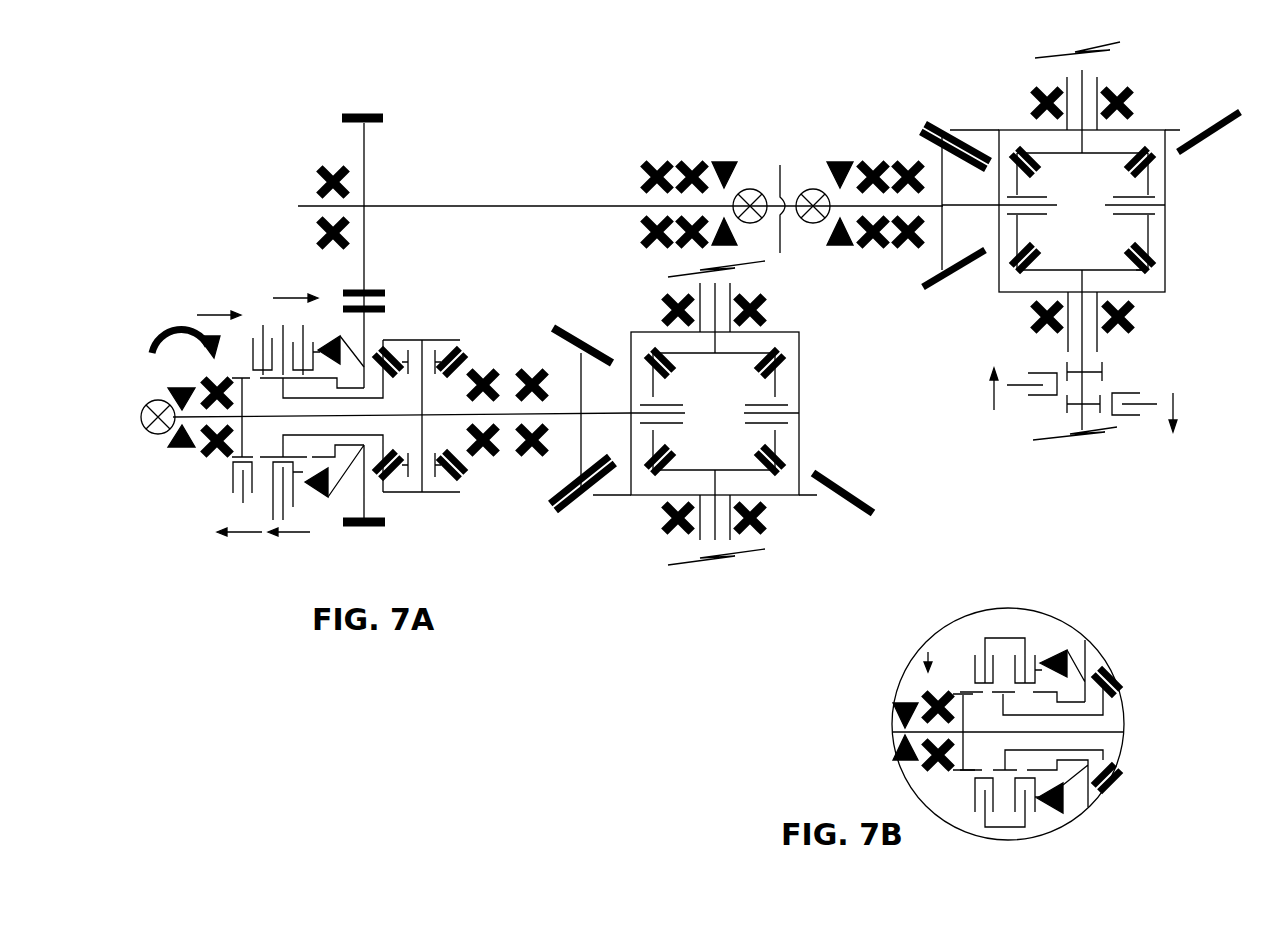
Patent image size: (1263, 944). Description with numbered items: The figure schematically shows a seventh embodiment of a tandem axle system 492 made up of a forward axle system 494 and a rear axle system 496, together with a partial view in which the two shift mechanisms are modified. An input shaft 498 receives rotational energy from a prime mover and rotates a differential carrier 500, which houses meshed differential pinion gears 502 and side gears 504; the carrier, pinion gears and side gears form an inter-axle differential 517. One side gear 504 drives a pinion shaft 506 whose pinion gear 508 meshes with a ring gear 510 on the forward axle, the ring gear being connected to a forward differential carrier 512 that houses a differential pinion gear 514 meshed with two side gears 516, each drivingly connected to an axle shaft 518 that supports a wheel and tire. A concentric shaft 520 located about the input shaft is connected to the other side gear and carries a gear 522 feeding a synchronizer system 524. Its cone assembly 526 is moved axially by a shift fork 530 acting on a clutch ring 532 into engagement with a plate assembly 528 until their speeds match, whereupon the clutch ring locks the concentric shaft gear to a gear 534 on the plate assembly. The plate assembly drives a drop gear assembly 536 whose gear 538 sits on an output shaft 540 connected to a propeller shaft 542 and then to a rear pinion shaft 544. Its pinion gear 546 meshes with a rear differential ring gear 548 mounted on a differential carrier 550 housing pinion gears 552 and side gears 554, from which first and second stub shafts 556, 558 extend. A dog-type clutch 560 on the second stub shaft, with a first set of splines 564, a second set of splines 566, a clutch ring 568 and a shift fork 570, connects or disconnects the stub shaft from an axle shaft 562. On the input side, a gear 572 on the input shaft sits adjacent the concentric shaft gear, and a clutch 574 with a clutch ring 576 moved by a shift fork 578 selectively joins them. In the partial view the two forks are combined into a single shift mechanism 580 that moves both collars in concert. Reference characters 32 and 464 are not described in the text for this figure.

In FIG. 7A, the carrier 32 is at (948, 198).
In FIG. 7A, the direction arrow 464 is at (1012, 410).
In FIG. 7A, the tandem axle system 492 is at (652, 118).
In FIG. 7A, the forward axle system 494 is at (618, 552).
In FIG. 7A, the rear axle system 496 is at (1165, 442).
In FIG. 7A, the input shaft 498 is at (195, 410).
In FIG. 7B, the input shaft 498 is at (905, 757).
In FIG. 7A, the differential carrier 500 is at (432, 340).
In FIG. 7A, the differential pinion gears 502 is at (478, 352).
In FIG. 7A, the side gears 504 is at (470, 352).
In FIG. 7A, the pinion shaft 506 is at (515, 425).
In FIG. 7A, the pinion gear 508 is at (553, 500).
In FIG. 7A, the ring gear 510 is at (580, 510).
In FIG. 7A, the forward differential carrier 512 is at (800, 405).
In FIG. 7A, the differential pinion gear 514 is at (785, 355).
In FIG. 7A, the side gear 516 is at (770, 348).
In FIG. 7A, the inter-axle differential 517 is at (408, 510).
In FIG. 7A, the axle shaft 518 is at (717, 285).
In FIG. 7A, the concentric shaft 520 is at (380, 398).
In FIG. 7B, the concentric shaft 520 is at (1100, 718).
In FIG. 7A, the gear 522 is at (286, 343).
In FIG. 7B, the gear 522 is at (1003, 828).
In FIG. 7A, the synchronizer system 524 is at (260, 552).
In FIG. 7A, the cone assembly 526 is at (320, 505).
In FIG. 7A, the plate assembly 528 is at (348, 340).
In FIG. 7A, the shift fork 530 is at (307, 327).
In FIG. 7A, the clutch ring 532 is at (263, 522).
In FIG. 7B, the clutch ring 532 is at (1032, 655).
In FIG. 7A, the gear 534 is at (385, 432).
In FIG. 7A, the drop gear assembly 536 is at (372, 280).
In FIG. 7A, the gear 538 is at (365, 148).
In FIG. 7A, the output shaft 540 is at (518, 205).
In FIG. 7A, the propeller shaft 542 is at (773, 190).
In FIG. 7A, the rear pinion shaft 544 is at (848, 196).
In FIG. 7A, the pinion gear 546 is at (968, 278).
In FIG. 7A, the rear differential ring gear 548 is at (937, 122).
In FIG. 7A, the differential carrier 550 is at (1166, 235).
In FIG. 7A, the pinion gears 552 is at (1150, 257).
In FIG. 7A, the side gears 554 is at (1148, 272).
In FIG. 7A, the first stub shaft 556 is at (1090, 75).
In FIG. 7A, the second stub shaft 558 is at (1081, 347).
In FIG. 7A, the clutch 560 is at (985, 347).
In FIG. 7A, the axle shaft 562 is at (1083, 440).
In FIG. 7A, the first set of splines 564 is at (1108, 369).
In FIG. 7A, the second set of splines 566 is at (1062, 405).
In FIG. 7A, the clutch ring 568 is at (1125, 418).
In FIG. 7A, the shift fork 570 is at (1175, 398).
In FIG. 7A, the gear 572 is at (250, 368).
In FIG. 7B, the gear 572 is at (958, 690).
In FIG. 7A, the clutch 574 is at (252, 322).
In FIG. 7A, the clutch ring 576 is at (233, 468).
In FIG. 7B, the clutch ring 576 is at (977, 655).
In FIG. 7A, the shift fork 578 is at (243, 500).
In FIG. 7B, the single shift mechanism 580 is at (1005, 637).